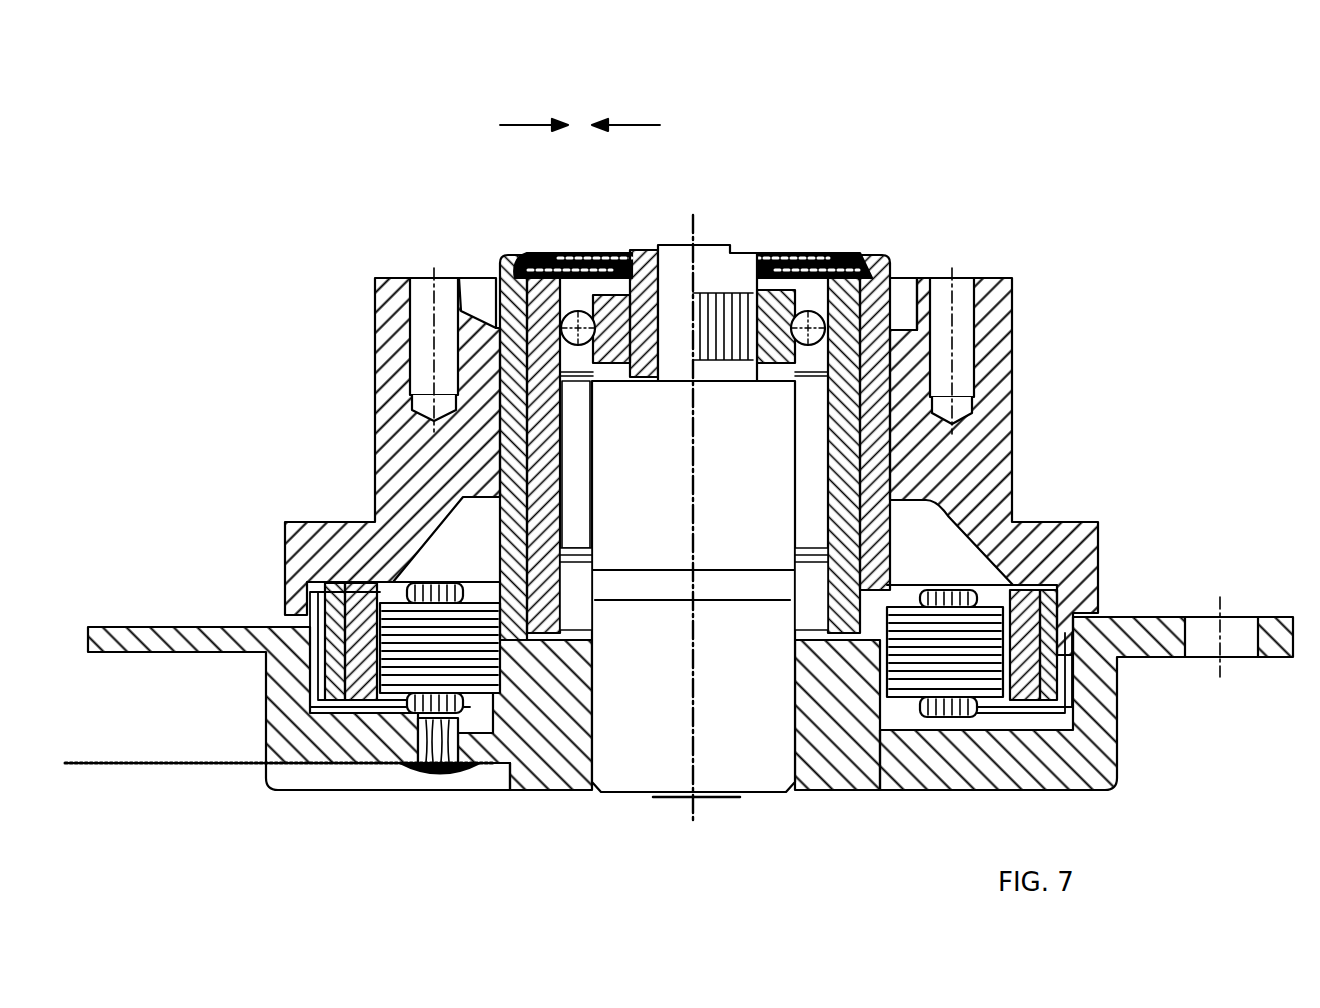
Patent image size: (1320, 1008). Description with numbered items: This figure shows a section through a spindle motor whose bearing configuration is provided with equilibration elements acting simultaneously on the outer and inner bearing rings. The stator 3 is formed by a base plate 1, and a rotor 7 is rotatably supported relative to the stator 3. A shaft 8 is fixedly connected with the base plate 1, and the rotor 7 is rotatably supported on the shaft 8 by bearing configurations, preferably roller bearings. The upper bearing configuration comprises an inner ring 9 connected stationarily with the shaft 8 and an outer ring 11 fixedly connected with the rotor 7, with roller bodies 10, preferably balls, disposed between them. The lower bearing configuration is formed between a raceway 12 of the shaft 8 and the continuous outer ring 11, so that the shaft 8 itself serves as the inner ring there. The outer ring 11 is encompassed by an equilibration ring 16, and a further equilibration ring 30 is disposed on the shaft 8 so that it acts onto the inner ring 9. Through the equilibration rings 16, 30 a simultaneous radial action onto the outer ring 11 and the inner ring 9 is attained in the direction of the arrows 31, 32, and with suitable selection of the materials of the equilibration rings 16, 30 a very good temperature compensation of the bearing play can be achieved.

The base plate 1 is at (848, 752).
The stator 3 is at (1125, 720).
The rotor 7 is at (1020, 440).
The shaft 8 is at (750, 698).
The inner ring 9 is at (608, 292).
The roller bodies 10 is at (553, 253).
The outer ring 11 is at (547, 322).
The raceway 12 is at (637, 590).
The equilibration ring 16 is at (461, 311).
The further equilibration ring 30 is at (656, 250).
The arrow 31 is at (517, 125).
The arrow 32 is at (643, 125).